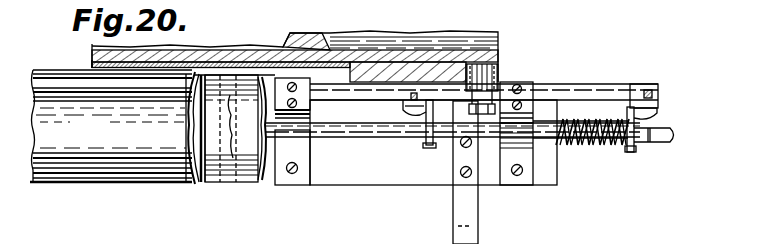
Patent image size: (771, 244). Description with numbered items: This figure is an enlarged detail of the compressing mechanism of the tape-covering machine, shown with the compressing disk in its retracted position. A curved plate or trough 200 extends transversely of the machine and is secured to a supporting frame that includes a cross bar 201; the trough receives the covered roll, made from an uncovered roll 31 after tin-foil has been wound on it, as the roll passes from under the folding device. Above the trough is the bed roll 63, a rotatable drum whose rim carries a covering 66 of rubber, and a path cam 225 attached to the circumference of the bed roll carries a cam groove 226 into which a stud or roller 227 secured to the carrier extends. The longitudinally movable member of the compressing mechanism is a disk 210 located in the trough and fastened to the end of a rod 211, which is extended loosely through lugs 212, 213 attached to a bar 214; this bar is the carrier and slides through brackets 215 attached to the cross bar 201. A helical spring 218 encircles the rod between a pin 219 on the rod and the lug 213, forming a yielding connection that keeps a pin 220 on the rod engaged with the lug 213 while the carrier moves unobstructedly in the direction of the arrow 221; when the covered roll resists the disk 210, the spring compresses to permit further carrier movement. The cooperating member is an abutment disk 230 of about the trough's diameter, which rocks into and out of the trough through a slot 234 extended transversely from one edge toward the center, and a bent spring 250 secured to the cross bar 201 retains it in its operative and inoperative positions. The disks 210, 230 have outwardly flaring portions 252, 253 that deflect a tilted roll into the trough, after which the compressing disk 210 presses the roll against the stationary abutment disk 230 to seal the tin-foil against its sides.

The uncovered roll 31 is at (232, 186).
The bed roll 63 is at (205, 48).
The rubber covering 66 is at (91, 62).
The trough 200 is at (111, 126).
The cross bar 201 is at (452, 142).
The compressing disk 210 is at (270, 184).
The rod 211 is at (535, 141).
The lug 212 is at (430, 149).
The lug 213 is at (659, 119).
The carrier bar 214 is at (622, 97).
The guiding bracket 215 is at (311, 184).
The helical spring 218 is at (620, 150).
The pin 219 is at (557, 125).
The pin 220 is at (659, 146).
The arrow 221 is at (607, 197).
The path cam 225 is at (363, 56).
The cam groove 226 is at (498, 63).
The stud or roller 227 is at (501, 76).
The abutment disk 230 is at (199, 185).
The slot 234 is at (185, 163).
The bent spring 250 is at (474, 211).
The flaring portion 252 is at (305, 112).
The flaring portion 253 is at (188, 121).